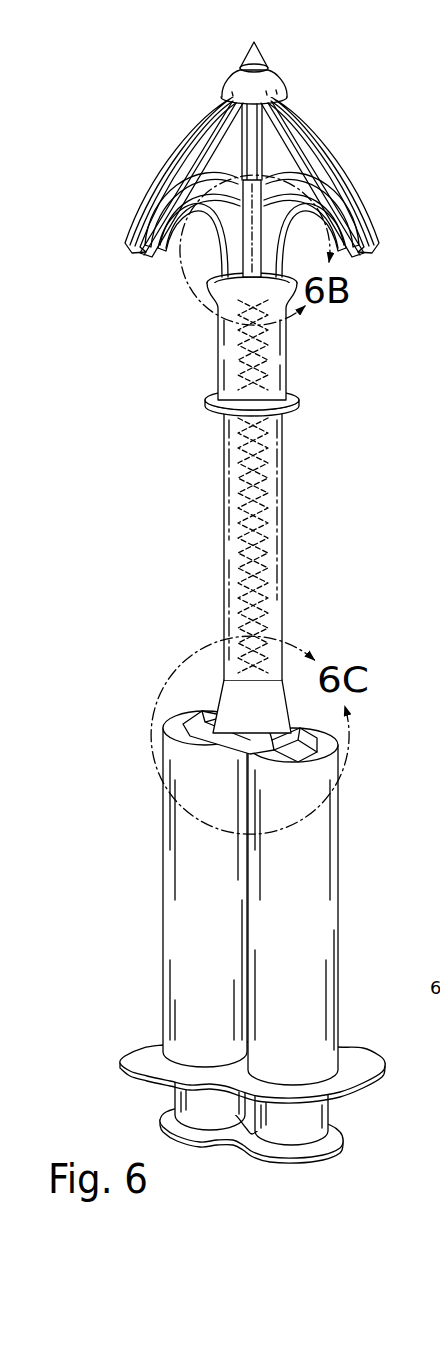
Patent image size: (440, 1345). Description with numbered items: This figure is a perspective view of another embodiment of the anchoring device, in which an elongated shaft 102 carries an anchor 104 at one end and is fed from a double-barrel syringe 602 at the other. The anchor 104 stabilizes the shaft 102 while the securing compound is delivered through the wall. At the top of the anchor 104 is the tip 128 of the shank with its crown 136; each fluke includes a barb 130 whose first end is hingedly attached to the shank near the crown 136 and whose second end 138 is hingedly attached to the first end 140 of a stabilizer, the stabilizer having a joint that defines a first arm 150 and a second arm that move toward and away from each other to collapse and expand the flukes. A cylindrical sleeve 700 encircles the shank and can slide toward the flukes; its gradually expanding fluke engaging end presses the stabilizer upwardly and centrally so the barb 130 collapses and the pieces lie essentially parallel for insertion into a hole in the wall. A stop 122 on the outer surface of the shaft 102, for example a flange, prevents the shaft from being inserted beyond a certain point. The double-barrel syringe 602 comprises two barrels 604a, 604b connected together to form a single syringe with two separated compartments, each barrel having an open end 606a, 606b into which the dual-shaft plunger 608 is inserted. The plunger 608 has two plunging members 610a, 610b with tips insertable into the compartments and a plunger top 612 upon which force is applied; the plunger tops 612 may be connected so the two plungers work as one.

The anchor 104 is at (238, 372).
The crown 136 is at (251, 46).
The tip 128 is at (246, 173).
The second end of the barb 138 is at (114, 220).
The barb 130 is at (362, 191).
The first arm 150 is at (160, 258).
The first end of the stabilizer 140 is at (360, 287).
The sleeve 700 is at (282, 378).
The stop 122 is at (207, 400).
The elongated shaft 102 is at (282, 530).
The double-barrel syringe 602 is at (242, 958).
The barrel 604a is at (165, 898).
The barrel 604b is at (338, 915).
The open end 606a is at (148, 1100).
The open end 606b is at (342, 1100).
The dual-shaft plunger 608 is at (286, 1155).
The plunging member 610a is at (198, 1112).
The plunging member 610b is at (327, 1115).
The plunger top 612 is at (333, 1160).